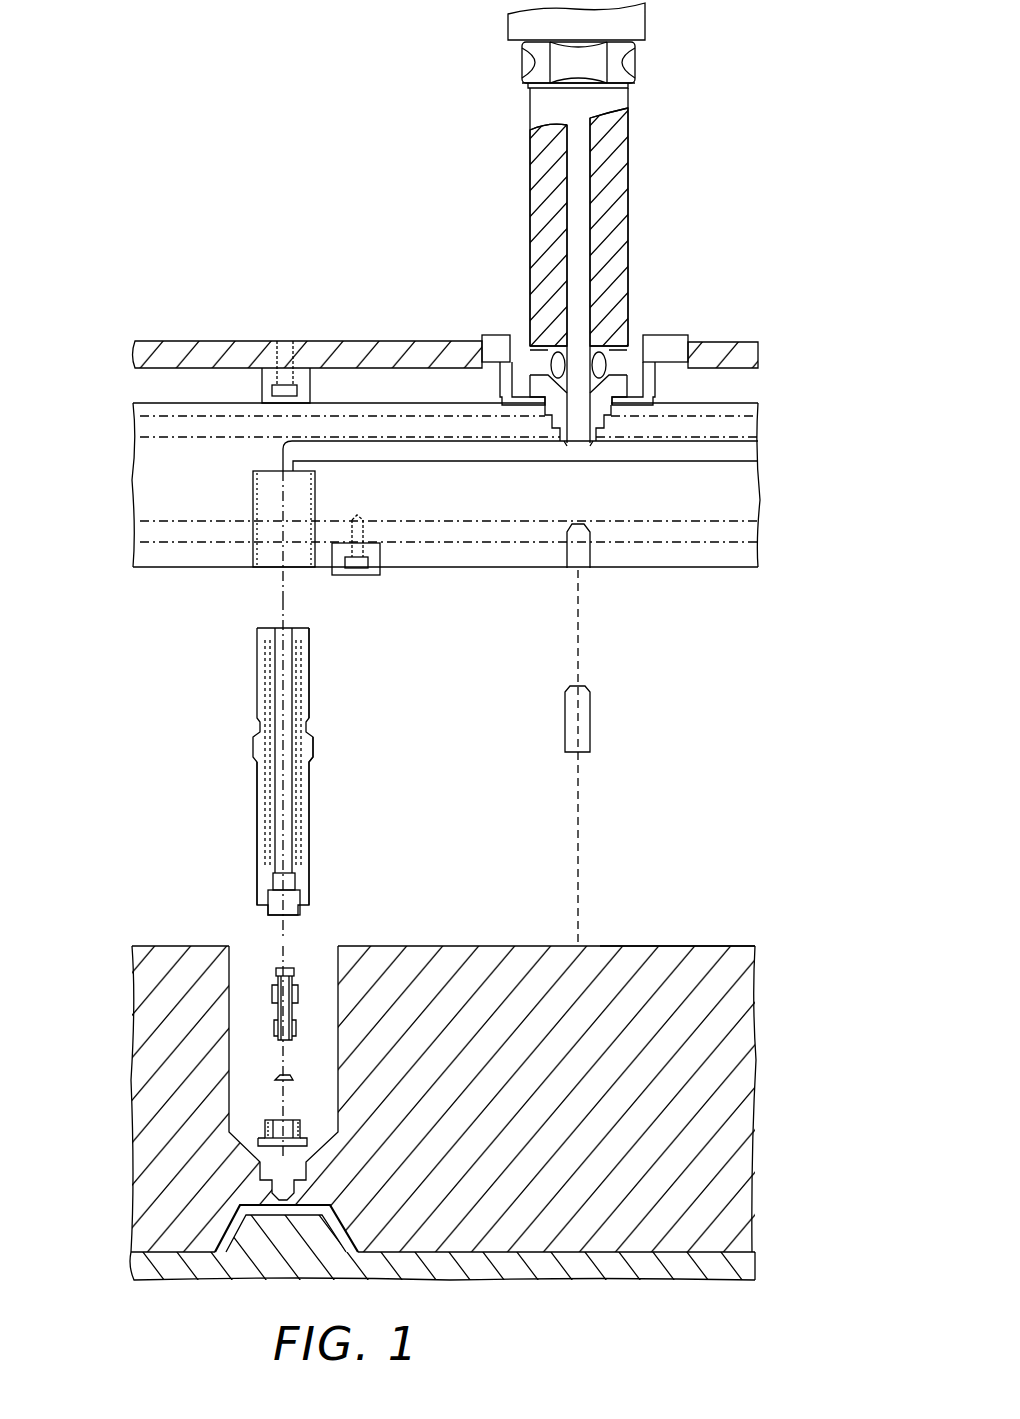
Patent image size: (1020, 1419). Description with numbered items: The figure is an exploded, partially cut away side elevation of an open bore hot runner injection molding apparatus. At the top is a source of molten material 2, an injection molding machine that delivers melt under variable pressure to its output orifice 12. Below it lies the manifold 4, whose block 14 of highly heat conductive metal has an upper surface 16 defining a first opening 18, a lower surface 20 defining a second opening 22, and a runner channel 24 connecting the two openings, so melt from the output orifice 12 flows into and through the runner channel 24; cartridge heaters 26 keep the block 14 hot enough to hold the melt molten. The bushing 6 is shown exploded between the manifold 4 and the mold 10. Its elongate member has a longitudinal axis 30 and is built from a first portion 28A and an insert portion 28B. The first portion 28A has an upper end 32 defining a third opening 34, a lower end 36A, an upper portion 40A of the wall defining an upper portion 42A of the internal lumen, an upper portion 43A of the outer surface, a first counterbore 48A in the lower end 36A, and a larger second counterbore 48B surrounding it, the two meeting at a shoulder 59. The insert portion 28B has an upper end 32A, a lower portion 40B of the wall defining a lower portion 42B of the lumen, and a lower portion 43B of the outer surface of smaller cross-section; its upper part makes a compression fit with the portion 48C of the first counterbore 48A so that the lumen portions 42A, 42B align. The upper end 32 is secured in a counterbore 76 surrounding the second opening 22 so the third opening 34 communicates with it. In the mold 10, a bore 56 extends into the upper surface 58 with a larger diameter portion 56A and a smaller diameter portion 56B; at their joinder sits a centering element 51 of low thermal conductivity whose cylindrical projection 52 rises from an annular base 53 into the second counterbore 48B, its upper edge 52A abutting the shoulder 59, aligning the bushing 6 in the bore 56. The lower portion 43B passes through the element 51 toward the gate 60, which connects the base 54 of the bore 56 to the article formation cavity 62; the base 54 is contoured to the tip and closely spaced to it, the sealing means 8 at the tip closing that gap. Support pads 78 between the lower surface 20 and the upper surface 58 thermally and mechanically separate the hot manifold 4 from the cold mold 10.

The source of molten material 2 is at (648, 132).
The manifold 4 is at (766, 480).
The bushing 6 is at (250, 740).
The sealing means 8 is at (294, 1076).
The mold 10 is at (443, 1072).
The output orifice 12 is at (580, 372).
The block 14 is at (740, 503).
The upper surface 16 is at (700, 405).
The first opening 18 is at (577, 448).
The lower surface 20 is at (708, 569).
The second opening 22 is at (281, 469).
The runner channel 24 is at (399, 452).
The cartridge heaters 26 is at (158, 427).
The first portion 28A is at (269, 773).
The insert portion 28B is at (280, 1010).
The longitudinal axis 30 is at (297, 753).
The upper end 32 is at (268, 628).
The upper end of insert portion 32A is at (295, 973).
The third opening 34 is at (287, 627).
The lower end of first portion 36A is at (307, 915).
The upper portion of wall 40A is at (318, 680).
The lower portion of wall 40B is at (277, 977).
The upper portion of internal lumen 42A is at (283, 670).
The lower portion of internal lumen 42B is at (295, 1017).
The upper portion of outer surface 43A is at (256, 793).
The lower portion of outer surface 43B is at (280, 1022).
The first counterbore 48A is at (297, 882).
The second counterbore 48B is at (267, 897).
The portion of first counterbore 48C is at (295, 873).
The centering element 51 is at (314, 1124).
The cylindrical projection 52 is at (266, 1128).
The upper edge 52A is at (267, 1125).
The annular base 53 is at (258, 1142).
The base 54 is at (282, 1200).
The bore 56 is at (342, 1135).
The larger diameter portion 56A is at (340, 1084).
The smaller diameter portion 56B is at (317, 1152).
The upper surface 58 is at (718, 946).
The shoulder 59 is at (268, 883).
The gate 60 is at (277, 1206).
The article formation cavity 62 is at (247, 1207).
The counterbore 76 is at (253, 497).
The support pads 78 is at (375, 553).